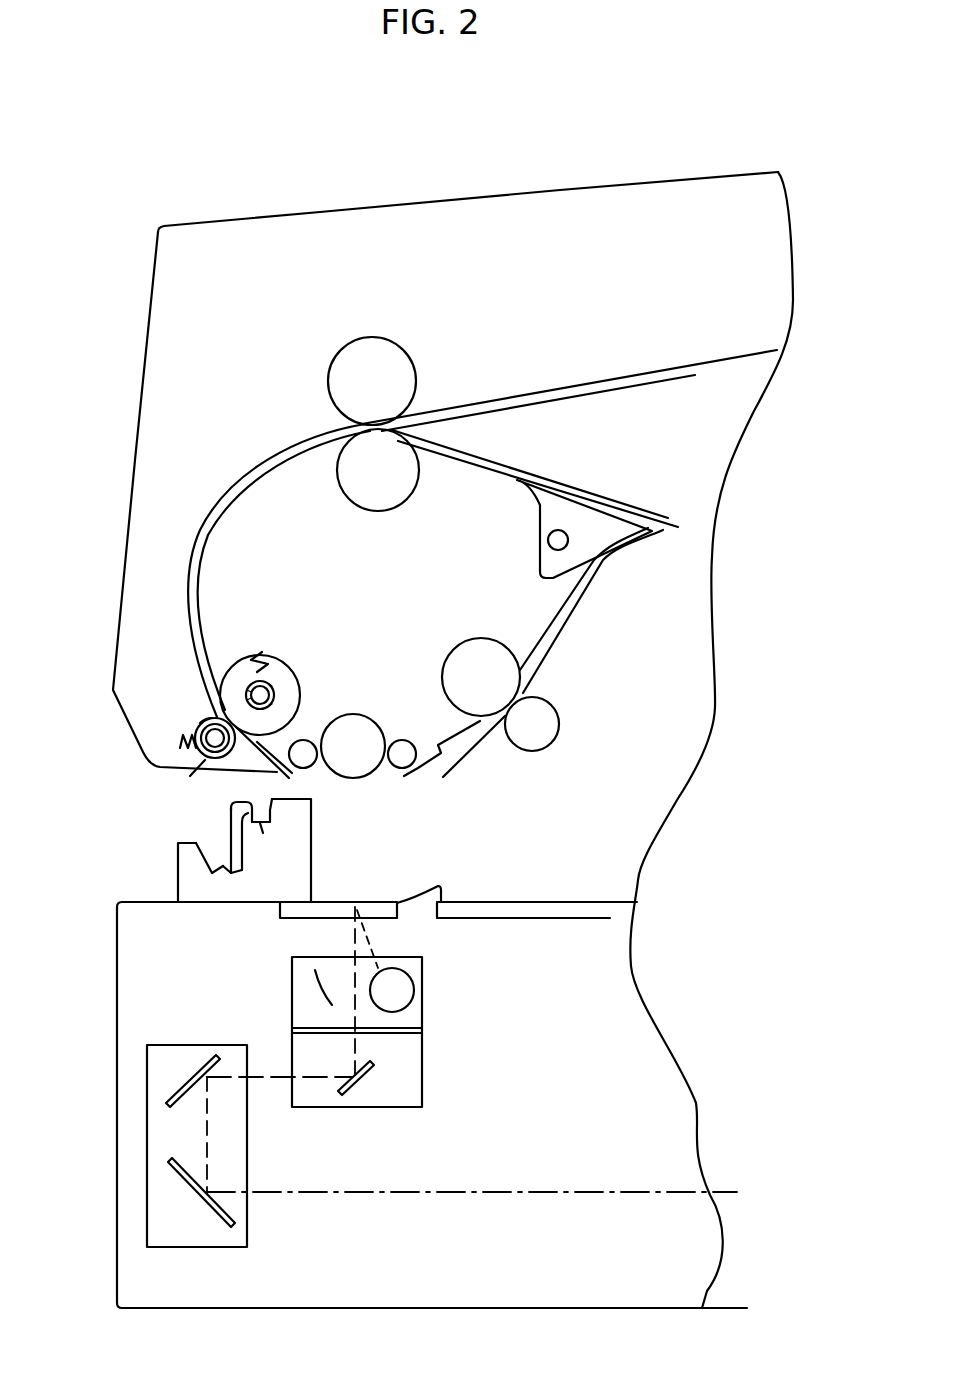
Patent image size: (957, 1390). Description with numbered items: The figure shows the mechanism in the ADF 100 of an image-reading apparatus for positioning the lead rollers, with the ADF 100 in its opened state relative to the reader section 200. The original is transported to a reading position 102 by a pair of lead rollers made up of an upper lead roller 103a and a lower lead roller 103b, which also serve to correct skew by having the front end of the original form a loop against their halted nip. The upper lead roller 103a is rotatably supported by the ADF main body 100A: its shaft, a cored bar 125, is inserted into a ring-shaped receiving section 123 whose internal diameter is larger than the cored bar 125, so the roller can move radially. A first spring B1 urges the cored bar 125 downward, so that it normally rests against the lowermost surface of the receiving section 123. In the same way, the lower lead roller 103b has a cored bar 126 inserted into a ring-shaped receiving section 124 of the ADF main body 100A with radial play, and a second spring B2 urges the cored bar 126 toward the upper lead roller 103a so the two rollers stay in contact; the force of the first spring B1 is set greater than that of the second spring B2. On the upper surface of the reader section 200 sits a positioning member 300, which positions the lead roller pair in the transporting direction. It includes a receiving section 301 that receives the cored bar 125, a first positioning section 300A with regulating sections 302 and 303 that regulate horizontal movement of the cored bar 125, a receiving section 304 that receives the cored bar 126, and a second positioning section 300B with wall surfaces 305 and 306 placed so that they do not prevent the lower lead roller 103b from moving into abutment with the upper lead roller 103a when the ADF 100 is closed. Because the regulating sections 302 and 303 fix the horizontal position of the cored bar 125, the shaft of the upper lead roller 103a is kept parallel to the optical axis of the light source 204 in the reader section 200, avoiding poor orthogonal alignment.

The ADF 100 is at (453, 471).
The ADF main body 100A is at (318, 212).
The reading position 102 is at (354, 900).
The upper lead roller 103a is at (300, 674).
The lower lead roller 103b is at (202, 757).
The receiving section 123 is at (275, 683).
The receiving section 124 is at (207, 722).
The cored bar 125 is at (270, 697).
The cored bar 126 is at (190, 776).
The reader section 200 is at (388, 1057).
The light source 204 is at (414, 990).
The positioning member 300 is at (231, 870).
The first positioning section 300A is at (262, 810).
The second positioning section 300B is at (225, 837).
The receiving section 301 is at (262, 830).
The regulating section 302 is at (270, 812).
The regulating section 303 is at (224, 871).
The receiving section 304 is at (222, 876).
The wall surface 305 is at (221, 846).
The wall surface 306 is at (197, 860).
The first spring B1 is at (260, 651).
The second spring B2 is at (178, 740).